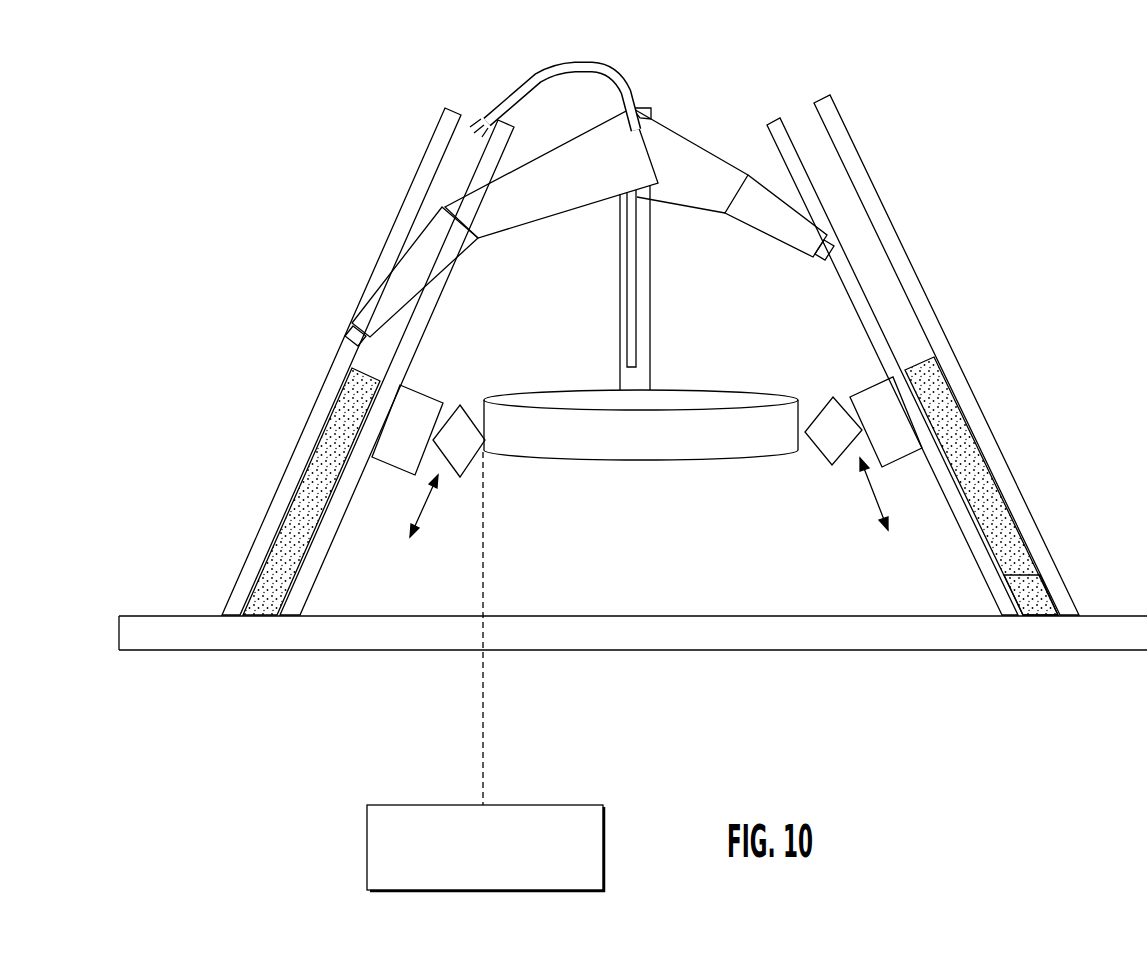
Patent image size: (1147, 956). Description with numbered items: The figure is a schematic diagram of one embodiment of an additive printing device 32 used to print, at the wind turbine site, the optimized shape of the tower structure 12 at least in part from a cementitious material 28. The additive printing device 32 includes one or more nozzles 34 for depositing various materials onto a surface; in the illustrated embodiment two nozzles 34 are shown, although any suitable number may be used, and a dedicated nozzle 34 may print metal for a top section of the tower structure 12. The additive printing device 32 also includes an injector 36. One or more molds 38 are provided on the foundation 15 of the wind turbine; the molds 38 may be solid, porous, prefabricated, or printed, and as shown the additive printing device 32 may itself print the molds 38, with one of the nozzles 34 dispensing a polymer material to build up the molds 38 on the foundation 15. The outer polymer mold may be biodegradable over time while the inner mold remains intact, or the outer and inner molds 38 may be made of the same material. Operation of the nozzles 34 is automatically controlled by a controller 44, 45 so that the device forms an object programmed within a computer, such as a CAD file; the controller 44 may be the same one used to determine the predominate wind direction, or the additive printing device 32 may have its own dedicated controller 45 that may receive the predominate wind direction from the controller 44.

The tower structure 12 is at (997, 533).
The foundation 15 is at (168, 615).
The cementitious material 28 is at (1033, 583).
The additive printing device 32 is at (517, 175).
The nozzles 34 is at (418, 258).
The injector 36 is at (560, 68).
The molds 38 is at (387, 263).
The controller 44 is at (441, 840).
The dedicated controller 45 is at (363, 865).